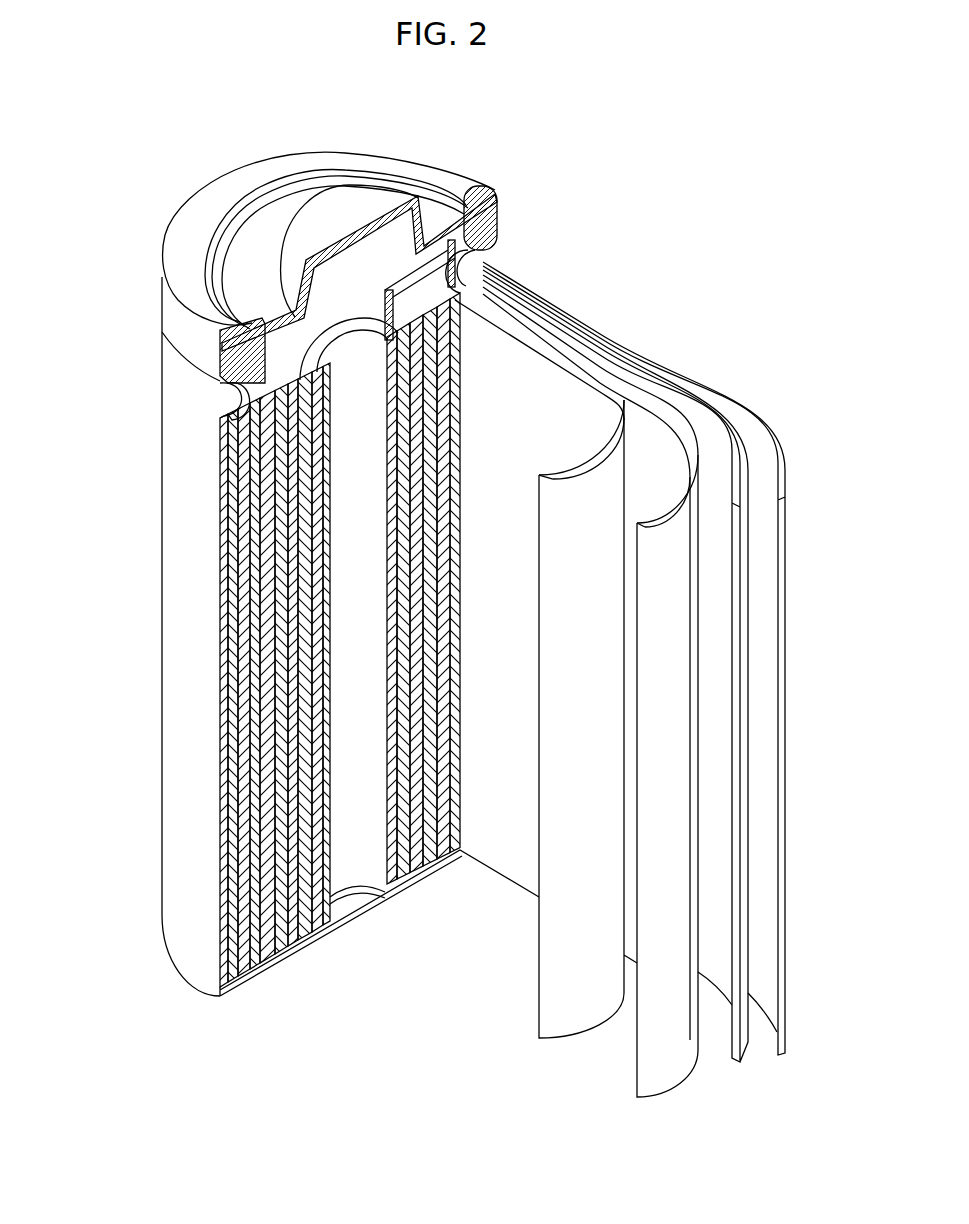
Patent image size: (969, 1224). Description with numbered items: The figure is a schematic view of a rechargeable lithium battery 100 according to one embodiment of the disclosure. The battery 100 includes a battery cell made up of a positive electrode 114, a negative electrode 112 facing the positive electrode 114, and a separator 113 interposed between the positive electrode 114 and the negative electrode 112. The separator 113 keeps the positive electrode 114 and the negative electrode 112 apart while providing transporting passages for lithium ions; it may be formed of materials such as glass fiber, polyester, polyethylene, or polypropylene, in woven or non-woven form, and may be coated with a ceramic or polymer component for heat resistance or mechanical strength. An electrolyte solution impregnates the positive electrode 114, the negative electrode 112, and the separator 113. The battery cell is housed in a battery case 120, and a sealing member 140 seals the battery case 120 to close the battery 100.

The rechargeable lithium battery 100 is at (496, 144).
The negative electrode 112 is at (748, 433).
The separator 113 is at (515, 343).
The positive electrode 114 is at (638, 402).
The battery case 120 is at (172, 617).
The sealing member 140 is at (312, 203).